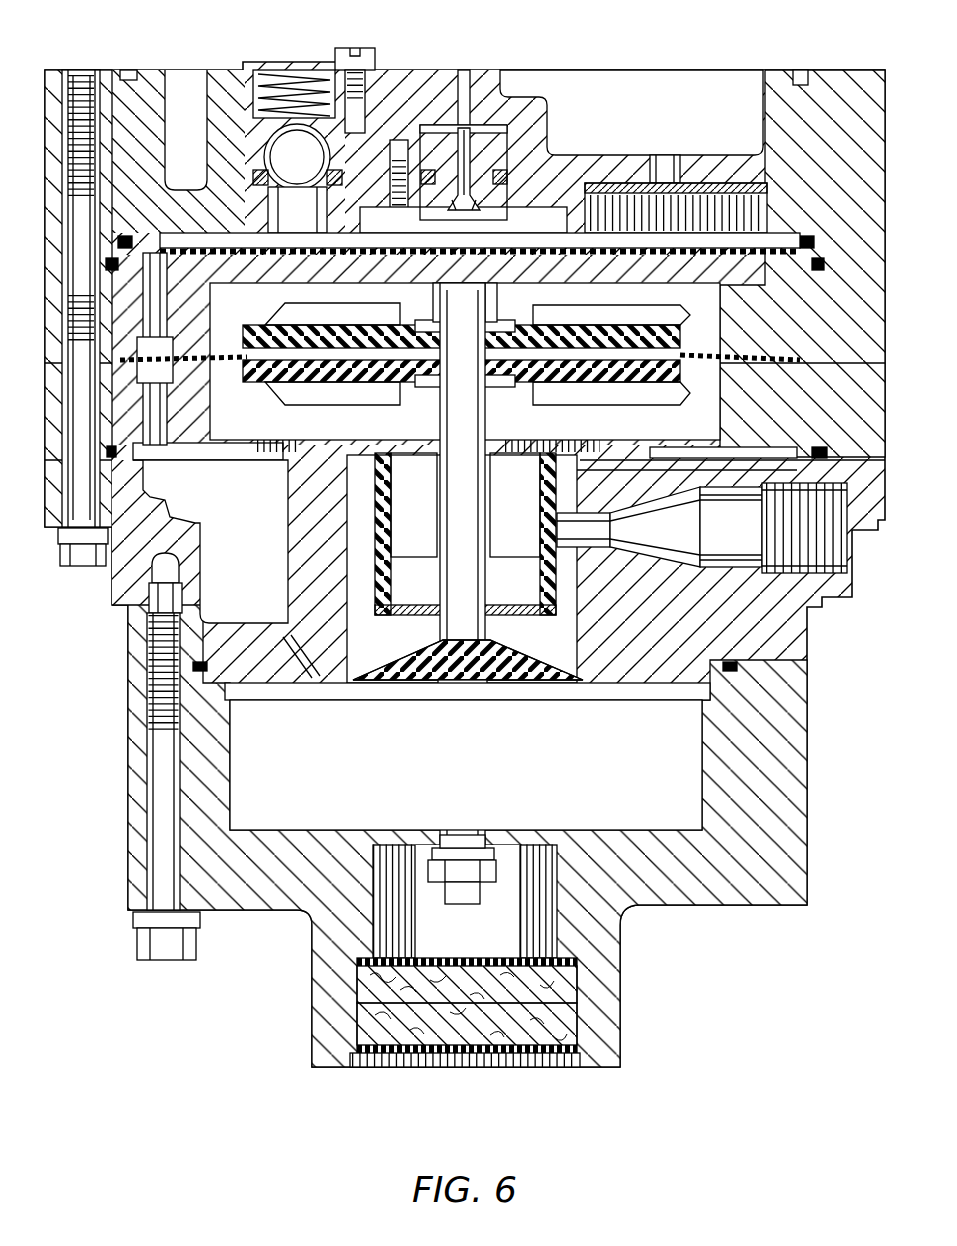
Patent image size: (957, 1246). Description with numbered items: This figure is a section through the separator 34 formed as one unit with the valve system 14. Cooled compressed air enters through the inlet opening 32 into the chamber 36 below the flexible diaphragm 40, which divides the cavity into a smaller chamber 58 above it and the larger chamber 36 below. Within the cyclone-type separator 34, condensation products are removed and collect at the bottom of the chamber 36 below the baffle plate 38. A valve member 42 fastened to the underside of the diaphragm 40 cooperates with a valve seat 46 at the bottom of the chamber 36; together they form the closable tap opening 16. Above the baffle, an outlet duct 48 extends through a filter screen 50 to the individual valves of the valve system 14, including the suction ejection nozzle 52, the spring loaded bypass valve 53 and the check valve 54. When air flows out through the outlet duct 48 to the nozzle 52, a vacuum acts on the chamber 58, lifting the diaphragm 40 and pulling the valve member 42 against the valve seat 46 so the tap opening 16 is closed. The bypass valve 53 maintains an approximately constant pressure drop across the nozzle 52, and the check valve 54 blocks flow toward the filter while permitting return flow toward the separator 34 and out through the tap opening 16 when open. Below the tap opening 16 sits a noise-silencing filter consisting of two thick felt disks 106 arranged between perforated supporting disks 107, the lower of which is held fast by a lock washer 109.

The valve system 14 is at (854, 70).
The tap opening 16 is at (525, 880).
The inlet opening 32 is at (826, 542).
The separator 34 is at (279, 566).
The collecting chamber 36 is at (331, 769).
The baffle plate 38 is at (405, 672).
The flexible diaphragm 40 is at (705, 368).
The valve member 42 is at (485, 752).
The valve seat 46 is at (422, 848).
The outlet duct 48 is at (157, 440).
The filter screen 50 is at (775, 245).
The suction ejection nozzle 52 is at (503, 143).
The spring loaded bypass valve 53 is at (300, 102).
The check valve 54 is at (683, 180).
The chamber above the diaphragm 58 is at (262, 288).
The felt disks 106 is at (568, 1015).
The perforated supporting disks 107 is at (483, 960).
The lock washer 109 is at (562, 1067).